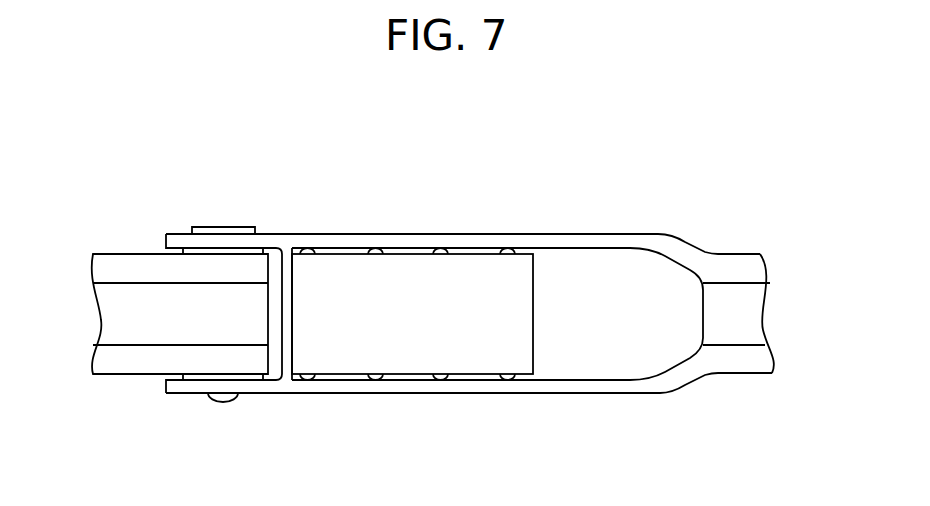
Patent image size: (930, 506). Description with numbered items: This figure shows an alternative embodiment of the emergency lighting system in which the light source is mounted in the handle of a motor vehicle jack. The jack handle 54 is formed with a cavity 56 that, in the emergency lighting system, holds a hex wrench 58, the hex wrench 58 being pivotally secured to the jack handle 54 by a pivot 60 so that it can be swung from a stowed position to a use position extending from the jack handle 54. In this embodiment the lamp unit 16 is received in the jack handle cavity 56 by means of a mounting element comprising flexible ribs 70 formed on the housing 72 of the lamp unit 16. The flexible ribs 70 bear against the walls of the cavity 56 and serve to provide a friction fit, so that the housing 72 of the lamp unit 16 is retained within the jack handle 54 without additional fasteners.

The lamp unit 16 is at (475, 338).
The jack handle 54 is at (747, 363).
The cavity 56 is at (612, 283).
The hex wrench 58 is at (123, 365).
The pivot 60 is at (223, 402).
The flexible ribs 70 is at (375, 248).
The housing 72 is at (477, 250).